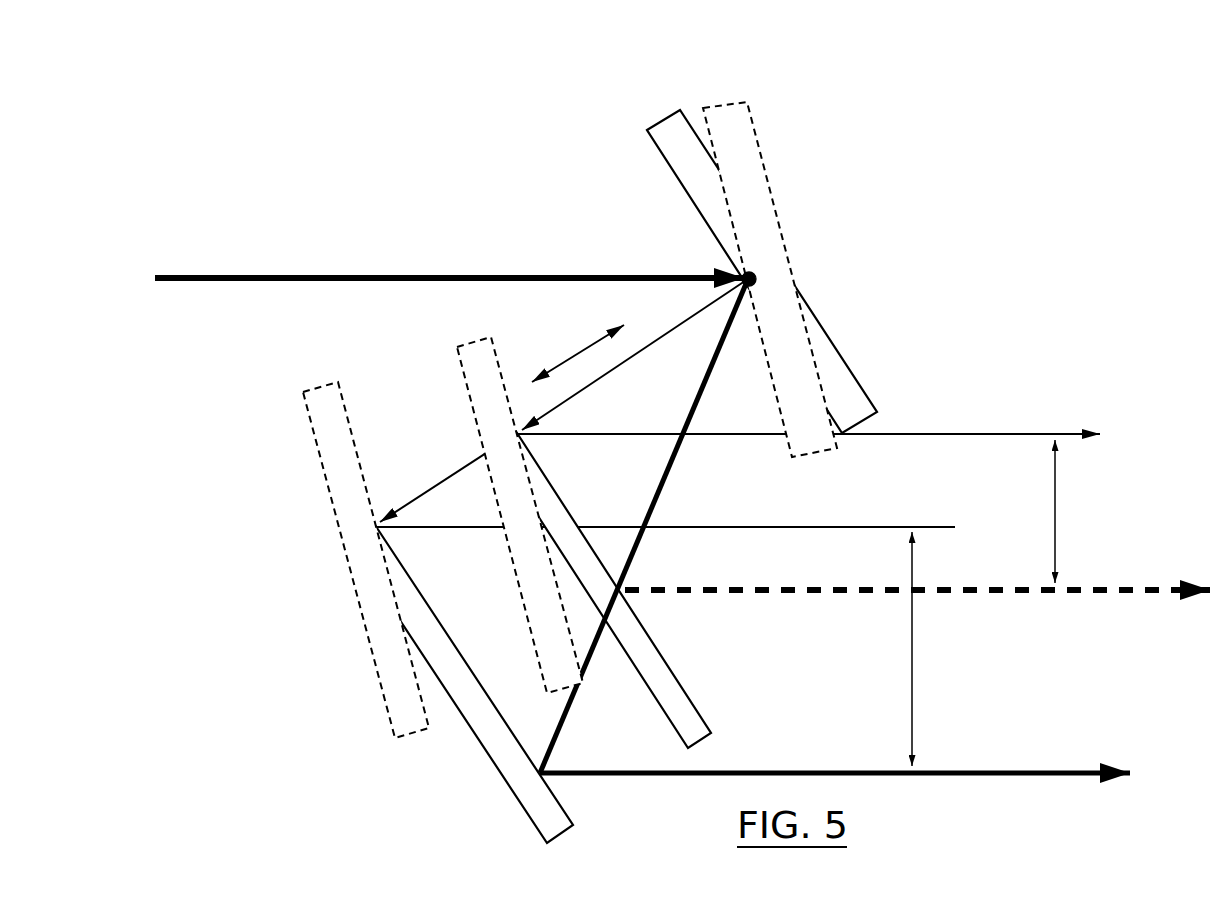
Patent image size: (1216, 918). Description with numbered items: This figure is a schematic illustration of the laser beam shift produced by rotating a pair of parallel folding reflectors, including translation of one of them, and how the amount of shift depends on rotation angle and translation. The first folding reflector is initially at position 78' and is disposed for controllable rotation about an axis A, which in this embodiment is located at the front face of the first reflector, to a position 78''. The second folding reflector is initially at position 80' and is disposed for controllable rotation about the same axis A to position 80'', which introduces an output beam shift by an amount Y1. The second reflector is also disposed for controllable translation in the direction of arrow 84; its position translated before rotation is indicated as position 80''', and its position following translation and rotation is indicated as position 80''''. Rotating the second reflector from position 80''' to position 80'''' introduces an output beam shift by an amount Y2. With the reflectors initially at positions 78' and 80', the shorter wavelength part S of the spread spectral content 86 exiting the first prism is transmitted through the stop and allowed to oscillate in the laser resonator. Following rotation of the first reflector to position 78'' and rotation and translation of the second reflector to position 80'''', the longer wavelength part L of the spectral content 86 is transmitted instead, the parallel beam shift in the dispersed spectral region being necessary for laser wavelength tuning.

The initial position of folding reflector 78 78' is at (758, 244).
The rotated position of folding reflector 78 78'' is at (770, 255).
The initial position of folding reflector 80 80' is at (461, 690).
The rotated position of folding reflector 80 80'' is at (366, 587).
The translated position of folding reflector 80 80''' is at (638, 590).
The translated and rotated position of folding reflector 80 80'''' is at (488, 500).
The arrow 84 is at (551, 347).
The spread spectral content 86 is at (275, 275).
The axis A is at (758, 272).
The longer wavelength part L is at (819, 436).
The shorter wavelength part S is at (848, 774).
The output beam shift amount Y1 is at (929, 649).
The output beam shift amount Y2 is at (1073, 511).